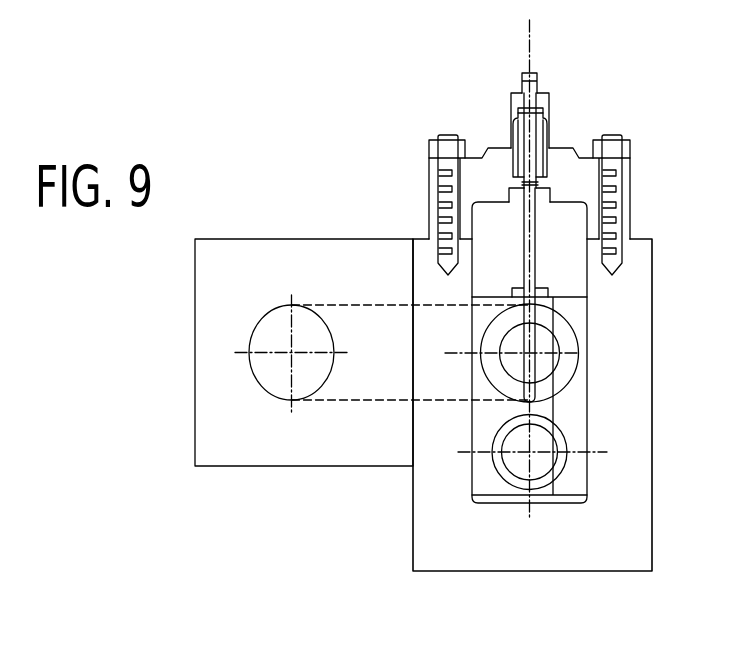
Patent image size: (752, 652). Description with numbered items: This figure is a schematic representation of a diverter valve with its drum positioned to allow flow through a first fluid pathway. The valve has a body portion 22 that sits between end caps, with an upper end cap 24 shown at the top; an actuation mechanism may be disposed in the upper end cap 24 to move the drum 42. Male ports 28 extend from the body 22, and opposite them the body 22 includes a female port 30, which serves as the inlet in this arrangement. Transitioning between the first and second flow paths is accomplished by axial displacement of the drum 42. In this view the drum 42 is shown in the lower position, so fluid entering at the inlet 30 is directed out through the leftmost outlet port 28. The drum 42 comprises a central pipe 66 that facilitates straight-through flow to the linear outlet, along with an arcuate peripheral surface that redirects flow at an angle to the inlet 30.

The body portion 22 is at (630, 295).
The upper end cap 24 is at (562, 152).
The male port 28 is at (336, 303).
The female port 30 is at (519, 362).
The drum 42 is at (577, 400).
The central pipe 66 is at (561, 471).